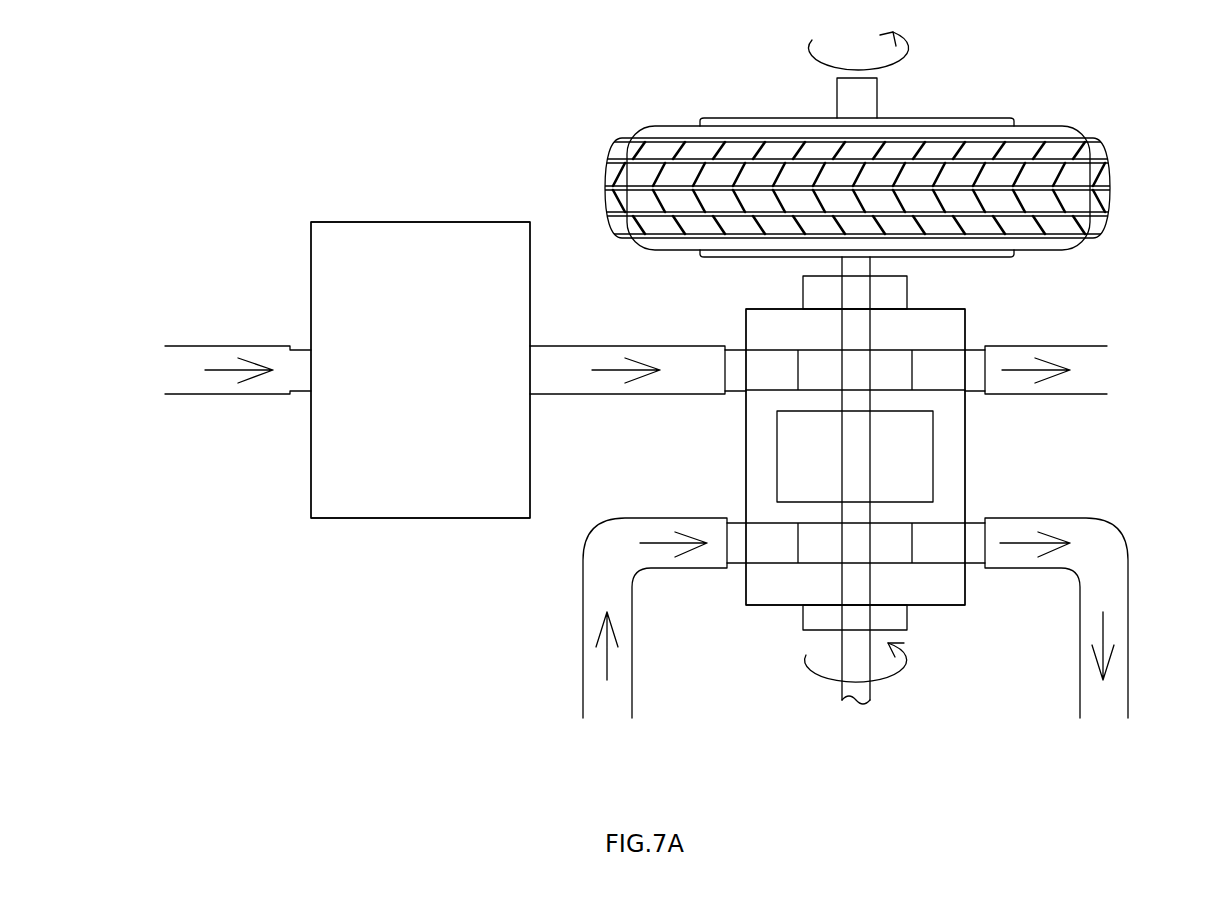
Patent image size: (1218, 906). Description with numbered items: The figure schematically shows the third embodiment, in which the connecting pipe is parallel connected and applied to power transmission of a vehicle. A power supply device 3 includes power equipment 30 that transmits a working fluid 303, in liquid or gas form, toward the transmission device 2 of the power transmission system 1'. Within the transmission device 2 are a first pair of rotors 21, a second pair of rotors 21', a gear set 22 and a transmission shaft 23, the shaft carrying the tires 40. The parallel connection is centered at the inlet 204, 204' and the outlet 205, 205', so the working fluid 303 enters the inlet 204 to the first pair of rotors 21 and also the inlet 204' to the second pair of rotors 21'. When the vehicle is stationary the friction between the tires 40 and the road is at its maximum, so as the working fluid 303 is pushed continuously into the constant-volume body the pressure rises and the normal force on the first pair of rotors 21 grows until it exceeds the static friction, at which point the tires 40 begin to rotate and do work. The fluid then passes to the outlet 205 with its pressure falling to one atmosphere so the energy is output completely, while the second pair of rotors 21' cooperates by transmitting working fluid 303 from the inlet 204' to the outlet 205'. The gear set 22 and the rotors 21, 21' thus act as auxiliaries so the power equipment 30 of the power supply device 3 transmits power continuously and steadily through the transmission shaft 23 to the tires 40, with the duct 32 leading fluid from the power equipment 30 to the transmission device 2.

The power supply device 3 is at (232, 140).
The power equipment 30 is at (333, 240).
The working fluid 303 is at (172, 365).
The air outlet duct 32 is at (627, 395).
The transmission device 2 is at (960, 687).
The power transmission system 1' is at (935, 453).
The first pair of rotors 21 is at (822, 343).
The second pair of rotors 21' is at (865, 605).
The gear set 22 is at (910, 480).
The inlet 204 is at (700, 403).
The outlet 205 is at (1015, 404).
The inlet 204' is at (697, 576).
The outlet 205' is at (1013, 593).
The transmission shaft 23 is at (865, 100).
The tires 40 is at (1047, 167).